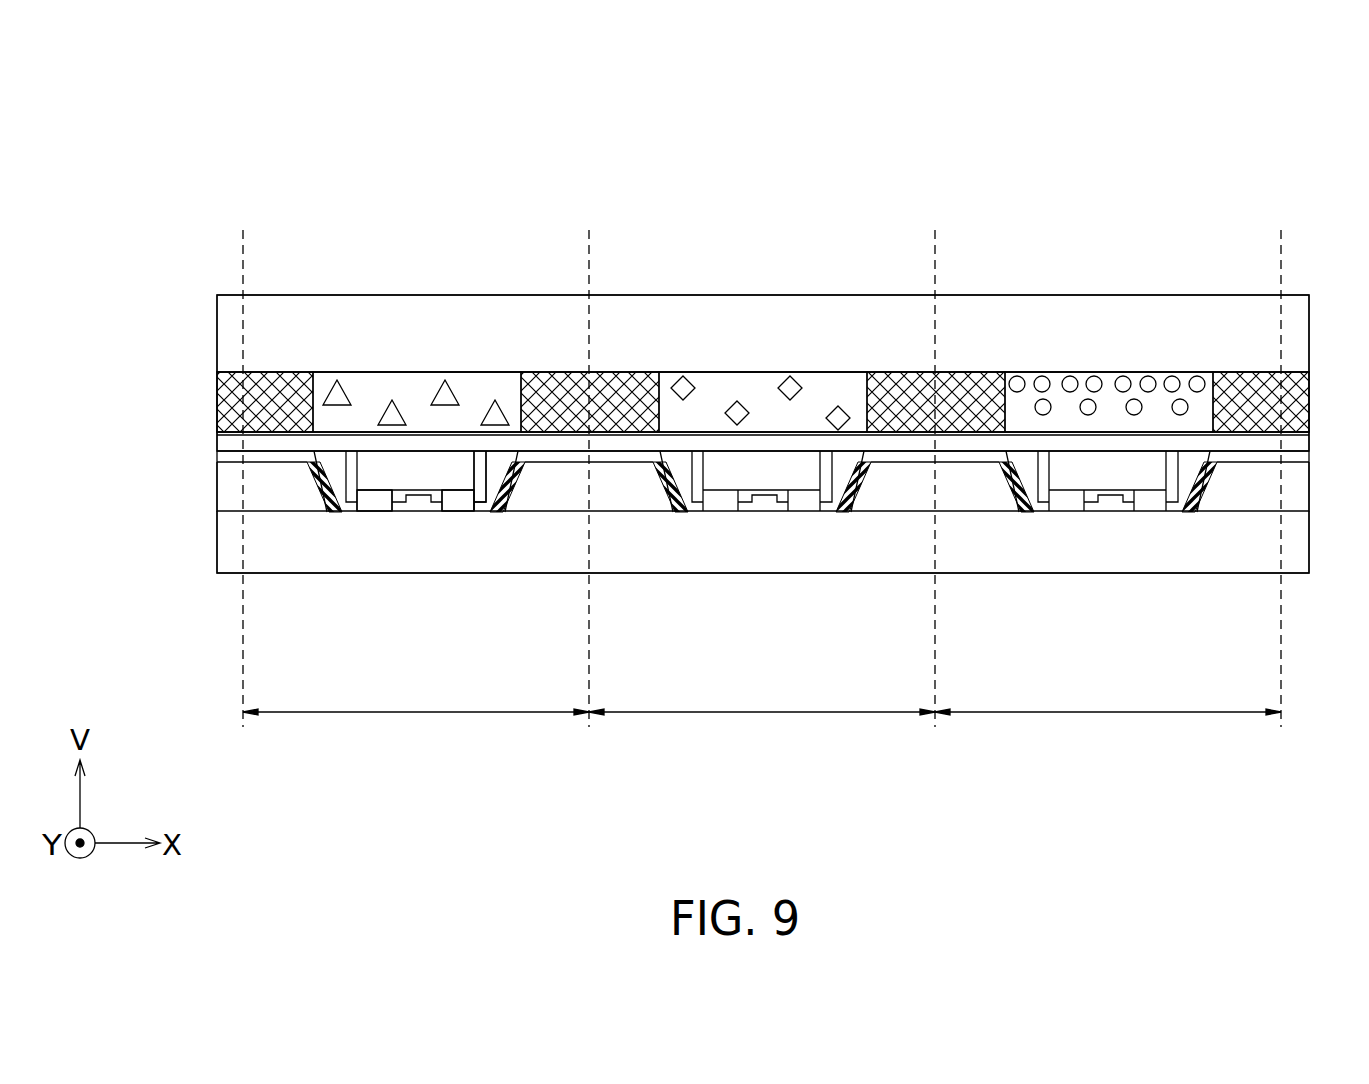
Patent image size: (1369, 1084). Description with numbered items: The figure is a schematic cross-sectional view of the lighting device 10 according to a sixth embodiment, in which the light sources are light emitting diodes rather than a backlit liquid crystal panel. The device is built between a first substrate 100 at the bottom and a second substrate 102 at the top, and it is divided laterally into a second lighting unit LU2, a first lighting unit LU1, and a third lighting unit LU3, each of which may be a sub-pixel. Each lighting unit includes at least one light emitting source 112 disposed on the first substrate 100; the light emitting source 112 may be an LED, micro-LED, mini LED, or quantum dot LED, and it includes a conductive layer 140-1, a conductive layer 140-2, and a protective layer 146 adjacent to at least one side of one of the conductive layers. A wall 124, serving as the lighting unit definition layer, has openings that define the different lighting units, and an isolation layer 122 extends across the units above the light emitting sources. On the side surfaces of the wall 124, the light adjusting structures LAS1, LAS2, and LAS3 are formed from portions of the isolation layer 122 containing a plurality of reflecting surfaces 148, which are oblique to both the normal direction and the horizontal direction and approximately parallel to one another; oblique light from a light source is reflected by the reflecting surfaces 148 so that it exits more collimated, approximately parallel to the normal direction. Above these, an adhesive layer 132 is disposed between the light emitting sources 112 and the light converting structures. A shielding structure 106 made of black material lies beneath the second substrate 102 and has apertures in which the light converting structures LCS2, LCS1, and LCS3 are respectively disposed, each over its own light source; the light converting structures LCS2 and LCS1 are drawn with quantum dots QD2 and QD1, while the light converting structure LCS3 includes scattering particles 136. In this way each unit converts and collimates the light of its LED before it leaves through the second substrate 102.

The lighting device 10 is at (1282, 121).
The first substrate 100 is at (233, 543).
The second substrate 102 is at (228, 335).
The shielding structure 106 is at (226, 402).
The light emitting source 112 is at (417, 538).
The isolation layer 122 is at (903, 458).
The wall 124 is at (230, 491).
The adhesive layer 132 is at (226, 441).
The scattering particles 136 is at (1145, 374).
The conductive layer 140-1 is at (372, 513).
The conductive layer 140-2 is at (457, 503).
The protective layer 146 is at (482, 495).
The reflecting surfaces 148 is at (873, 475).
The light converting structure LCS1 is at (697, 372).
The light converting structure LCS2 is at (352, 372).
The light converting structure LCS3 is at (1040, 372).
The first quantum dots QD1 is at (840, 408).
The second quantum dots QD2 is at (493, 405).
The light adjusting structure LAS1 is at (886, 420).
The light adjusting structure LAS2 is at (541, 420).
The light adjusting structure LAS3 is at (1233, 425).
The first lighting unit LU1 is at (762, 478).
The second lighting unit LU2 is at (416, 478).
The third lighting unit LU3 is at (1108, 478).